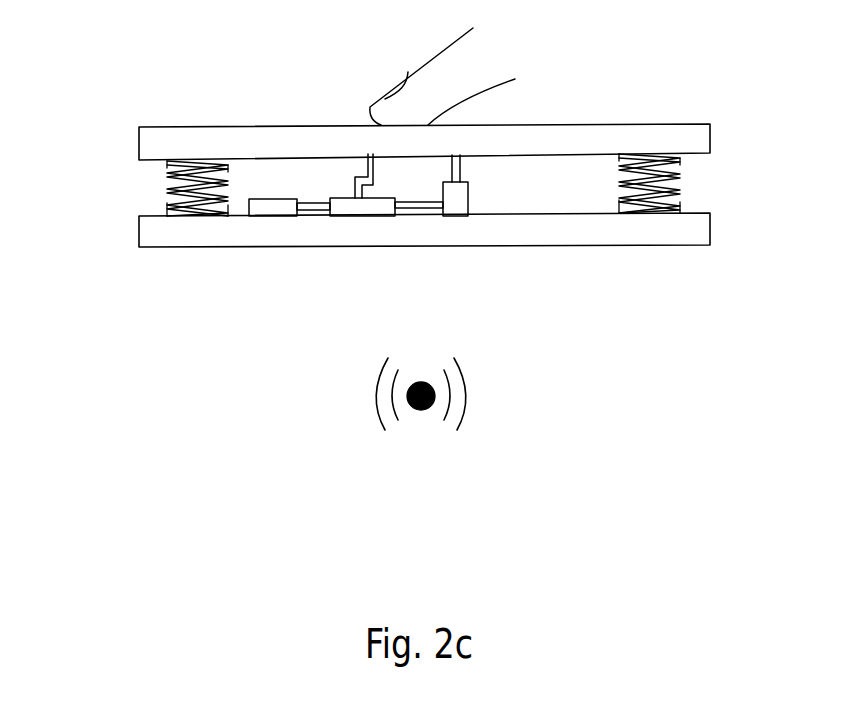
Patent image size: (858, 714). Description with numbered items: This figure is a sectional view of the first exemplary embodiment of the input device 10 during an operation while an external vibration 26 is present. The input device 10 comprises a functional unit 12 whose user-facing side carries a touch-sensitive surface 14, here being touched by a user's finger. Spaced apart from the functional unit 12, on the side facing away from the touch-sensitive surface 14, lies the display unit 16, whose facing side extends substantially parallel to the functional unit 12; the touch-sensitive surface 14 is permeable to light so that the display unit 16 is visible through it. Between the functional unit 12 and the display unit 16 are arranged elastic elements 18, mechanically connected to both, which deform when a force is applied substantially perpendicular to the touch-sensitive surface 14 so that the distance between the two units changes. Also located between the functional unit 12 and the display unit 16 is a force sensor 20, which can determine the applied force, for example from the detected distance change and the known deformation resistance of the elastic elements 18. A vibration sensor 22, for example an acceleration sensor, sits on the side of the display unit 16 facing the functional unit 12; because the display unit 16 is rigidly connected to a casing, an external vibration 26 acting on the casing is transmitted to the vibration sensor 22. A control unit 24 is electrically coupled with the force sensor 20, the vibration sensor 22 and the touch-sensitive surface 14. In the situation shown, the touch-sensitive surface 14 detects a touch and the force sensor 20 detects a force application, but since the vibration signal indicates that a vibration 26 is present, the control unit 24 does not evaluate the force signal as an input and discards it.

The input device 10 is at (119, 91).
The functional unit 12 is at (160, 146).
The touch-sensitive surface 14 is at (225, 127).
The display unit 16 is at (152, 231).
The elastic elements 18 is at (172, 182).
The force sensor 20 is at (457, 193).
The vibration sensor 22 is at (270, 210).
The control unit 24 is at (362, 210).
The external vibration 26 is at (500, 383).